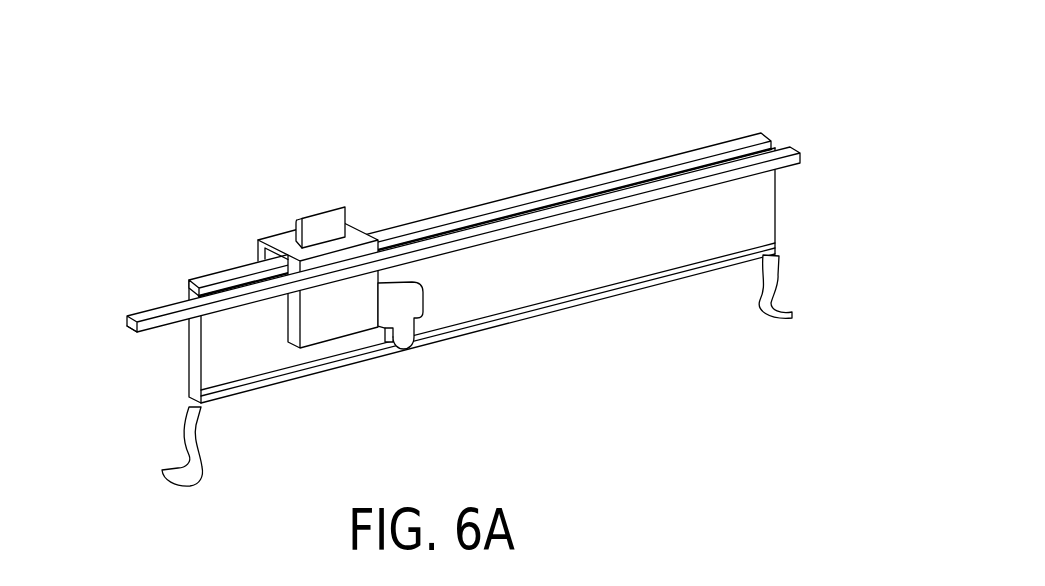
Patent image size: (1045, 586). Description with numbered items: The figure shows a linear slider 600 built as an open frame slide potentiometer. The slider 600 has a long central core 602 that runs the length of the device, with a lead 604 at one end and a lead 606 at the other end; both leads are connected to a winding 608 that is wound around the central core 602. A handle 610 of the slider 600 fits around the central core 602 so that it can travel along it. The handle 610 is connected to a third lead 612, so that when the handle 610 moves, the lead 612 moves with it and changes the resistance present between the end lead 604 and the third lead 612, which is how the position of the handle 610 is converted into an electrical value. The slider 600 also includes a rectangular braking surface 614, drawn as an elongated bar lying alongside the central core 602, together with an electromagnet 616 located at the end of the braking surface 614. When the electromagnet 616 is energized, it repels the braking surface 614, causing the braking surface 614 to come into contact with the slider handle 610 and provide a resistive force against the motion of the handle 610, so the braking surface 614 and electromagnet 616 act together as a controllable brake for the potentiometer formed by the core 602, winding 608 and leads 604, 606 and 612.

The linear slider 600 is at (425, 248).
The central core 602 is at (489, 205).
The lead 604 is at (762, 302).
The lead 606 is at (180, 466).
The winding 608 is at (563, 305).
The handle 610 is at (327, 218).
The third lead 612 is at (398, 333).
The rectangular braking surface 614 is at (128, 317).
The electromagnet 616 is at (127, 332).